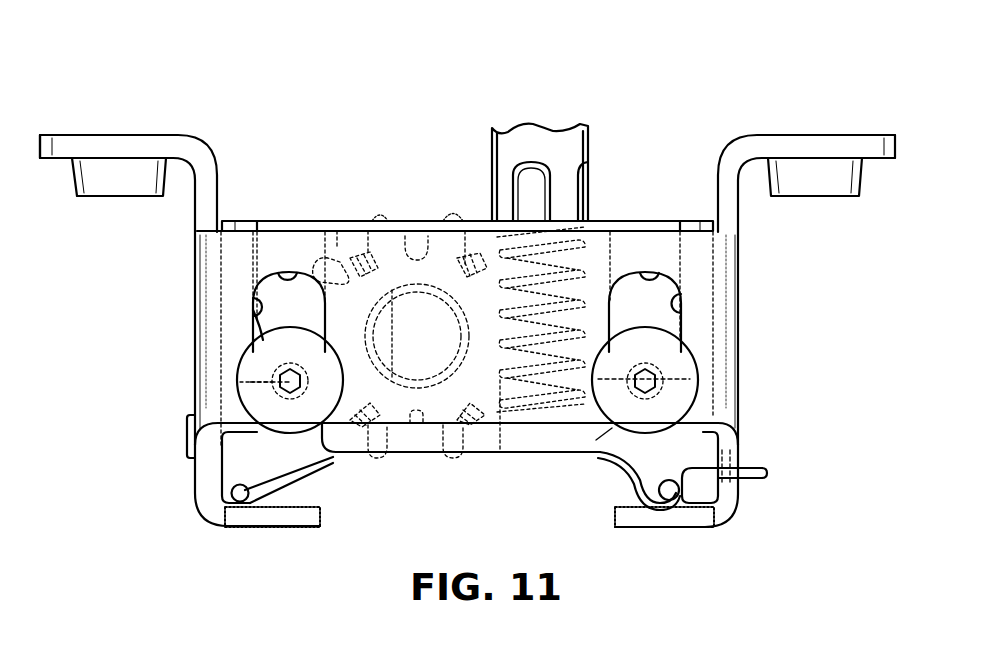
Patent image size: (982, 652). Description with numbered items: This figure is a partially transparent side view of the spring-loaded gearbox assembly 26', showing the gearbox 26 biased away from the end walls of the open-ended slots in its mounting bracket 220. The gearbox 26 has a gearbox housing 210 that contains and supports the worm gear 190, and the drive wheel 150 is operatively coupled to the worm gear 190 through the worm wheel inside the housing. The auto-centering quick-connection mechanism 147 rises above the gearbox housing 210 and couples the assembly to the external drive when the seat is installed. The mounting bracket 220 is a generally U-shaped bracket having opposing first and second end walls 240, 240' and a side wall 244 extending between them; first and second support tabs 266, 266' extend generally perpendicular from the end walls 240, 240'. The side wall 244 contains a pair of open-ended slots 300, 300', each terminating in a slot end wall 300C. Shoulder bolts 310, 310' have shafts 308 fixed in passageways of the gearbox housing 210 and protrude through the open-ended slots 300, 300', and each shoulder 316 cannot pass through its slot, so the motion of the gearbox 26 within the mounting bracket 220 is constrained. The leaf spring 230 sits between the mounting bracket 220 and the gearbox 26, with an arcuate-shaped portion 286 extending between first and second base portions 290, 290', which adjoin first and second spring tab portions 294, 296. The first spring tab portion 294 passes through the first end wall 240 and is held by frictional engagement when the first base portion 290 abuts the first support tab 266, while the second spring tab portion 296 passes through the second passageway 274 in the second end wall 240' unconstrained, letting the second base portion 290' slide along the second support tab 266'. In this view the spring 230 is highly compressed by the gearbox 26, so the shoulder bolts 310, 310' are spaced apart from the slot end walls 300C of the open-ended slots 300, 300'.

The spring-loaded gearbox assembly 26' is at (59, 79).
The gearbox 26 is at (467, 171).
The auto-centering quick-connection mechanism 147 is at (484, 182).
The drive wheel 150 is at (341, 258).
The worm gear 190 is at (594, 260).
The gearbox housing 210 is at (357, 215).
The mounting bracket 220 is at (735, 516).
The spring 230 is at (598, 470).
The first end wall 240 is at (210, 379).
The second end wall 240' is at (733, 379).
The side wall 244 is at (258, 258).
The first support tab 266 is at (272, 564).
The second support tab 266' is at (664, 553).
The second passageway 274 is at (742, 447).
The arcuate-shaped portion 286 is at (325, 470).
The first base portion 290 is at (215, 539).
The second base portion 290' is at (715, 529).
The first spring tab portion 294 is at (190, 432).
The second spring tab portion 296 is at (755, 468).
The open-ended slot 300 is at (170, 292).
The open-ended slot 300' is at (700, 292).
The slot end wall 300C is at (281, 270).
The shaft 308 is at (285, 400).
The shoulder bolt 310 is at (225, 380).
The shoulder bolt 310' is at (714, 343).
The shoulder 316 is at (613, 427).